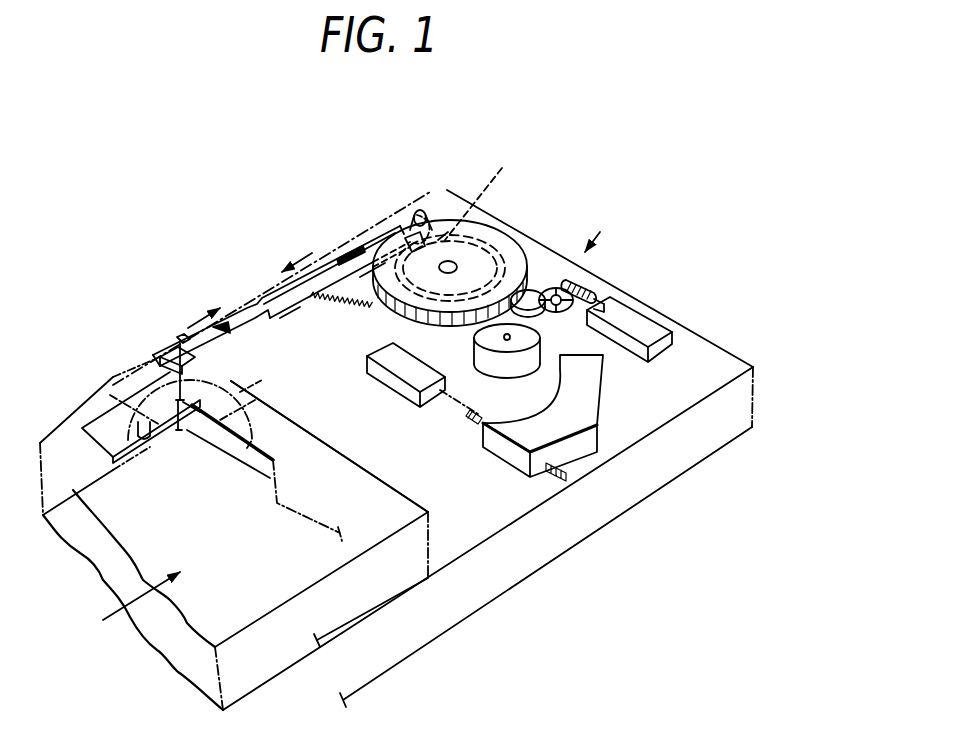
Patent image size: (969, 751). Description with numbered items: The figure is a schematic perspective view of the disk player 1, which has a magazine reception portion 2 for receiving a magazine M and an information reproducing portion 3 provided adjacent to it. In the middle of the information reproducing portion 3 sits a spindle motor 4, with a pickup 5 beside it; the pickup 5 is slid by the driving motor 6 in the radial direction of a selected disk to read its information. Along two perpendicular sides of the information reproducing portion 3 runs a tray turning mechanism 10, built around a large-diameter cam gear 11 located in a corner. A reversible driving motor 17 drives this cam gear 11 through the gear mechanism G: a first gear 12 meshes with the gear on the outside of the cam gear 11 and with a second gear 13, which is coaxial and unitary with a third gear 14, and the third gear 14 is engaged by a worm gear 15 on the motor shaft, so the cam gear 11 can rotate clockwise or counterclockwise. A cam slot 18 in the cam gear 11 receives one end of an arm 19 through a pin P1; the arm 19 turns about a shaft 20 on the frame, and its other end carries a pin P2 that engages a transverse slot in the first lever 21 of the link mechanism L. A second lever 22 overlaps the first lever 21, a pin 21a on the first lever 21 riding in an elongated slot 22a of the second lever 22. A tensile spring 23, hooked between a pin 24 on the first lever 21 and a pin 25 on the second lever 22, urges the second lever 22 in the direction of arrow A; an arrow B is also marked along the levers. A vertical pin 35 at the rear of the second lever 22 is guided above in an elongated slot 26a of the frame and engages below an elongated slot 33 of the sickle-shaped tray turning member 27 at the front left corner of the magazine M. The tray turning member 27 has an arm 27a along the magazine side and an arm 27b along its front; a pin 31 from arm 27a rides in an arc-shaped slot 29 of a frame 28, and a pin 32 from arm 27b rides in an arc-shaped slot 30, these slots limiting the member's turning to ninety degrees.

The disk player 1 is at (622, 494).
The magazine reception portion 2 is at (135, 604).
The information reproducing portion 3 is at (690, 356).
The spindle motor 4 is at (482, 343).
The pickup 5 is at (600, 398).
The driving motor 6 is at (390, 382).
The tray turning mechanism 10 is at (527, 240).
The large-diameter cam gear 11 is at (480, 232).
The first gear 12 is at (536, 292).
The second gear 13 is at (559, 314).
The third gear 14 is at (580, 284).
The worm gear 15 is at (604, 302).
The driving motor 17 is at (635, 314).
The cam slot 18 is at (510, 234).
The arm 19 is at (419, 211).
The shaft 20 is at (408, 230).
The first lever 21 is at (327, 266).
The pin 21a is at (372, 238).
The second lever 22 is at (238, 312).
The elongated slot 22a is at (348, 252).
The tensile spring 23 is at (340, 292).
The pin 24 is at (301, 307).
The pin 25 is at (372, 272).
The elongated slot 26a is at (160, 356).
The tray turning member 27 is at (154, 432).
The arm 27a is at (145, 438).
The arm 27b is at (250, 401).
The frame 28 is at (107, 450).
The arc-shaped slot 29 is at (110, 395).
The arc-shaped slot 30 is at (232, 394).
The pin 31 is at (174, 430).
The pin 32 is at (240, 412).
The elongated slot 33 is at (188, 428).
The pin 35 is at (178, 338).
The arrow direction A is at (294, 244).
The arrow direction B is at (201, 316).
The gear mechanism G is at (602, 228).
The link mechanism L is at (282, 258).
The magazine M is at (367, 473).
The pin P1 is at (450, 257).
The pin P2 is at (440, 238).